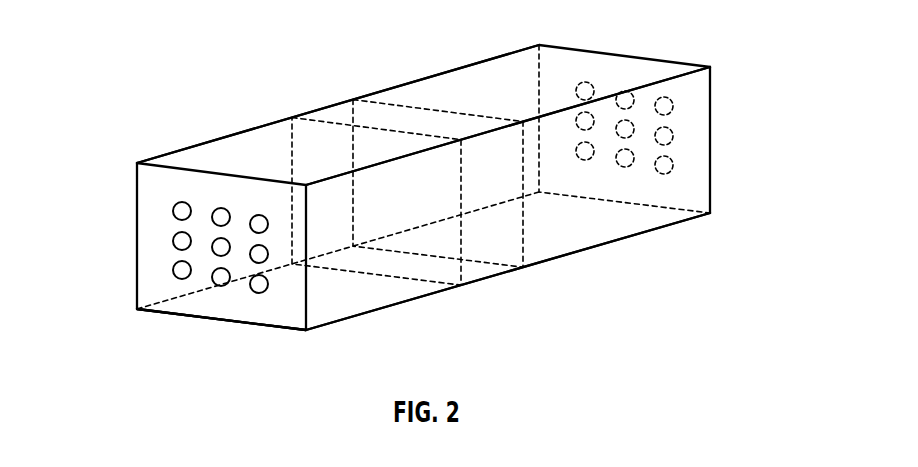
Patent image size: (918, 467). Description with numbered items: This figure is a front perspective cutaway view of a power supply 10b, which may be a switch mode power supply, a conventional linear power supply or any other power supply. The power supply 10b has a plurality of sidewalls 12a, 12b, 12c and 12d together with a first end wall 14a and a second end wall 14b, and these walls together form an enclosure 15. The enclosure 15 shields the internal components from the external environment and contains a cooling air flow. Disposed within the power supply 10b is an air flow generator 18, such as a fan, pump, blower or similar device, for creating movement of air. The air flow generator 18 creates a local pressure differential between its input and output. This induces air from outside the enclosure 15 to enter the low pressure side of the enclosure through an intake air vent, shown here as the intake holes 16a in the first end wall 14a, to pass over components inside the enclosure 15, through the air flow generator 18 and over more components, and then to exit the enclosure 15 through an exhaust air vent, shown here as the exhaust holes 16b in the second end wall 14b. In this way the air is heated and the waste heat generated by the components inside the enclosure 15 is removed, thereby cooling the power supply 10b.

The power supply 10b is at (150, 39).
The sidewall 12a is at (357, 309).
The sidewall 12b is at (268, 168).
The sidewall 12c is at (184, 142).
The sidewall 12d is at (169, 322).
The first end wall 14a is at (290, 318).
The second end wall 14b is at (694, 178).
The enclosure 15 is at (239, 316).
The intake holes 16a is at (173, 270).
The exhaust holes 16b is at (677, 165).
The air flow generator 18 is at (498, 284).